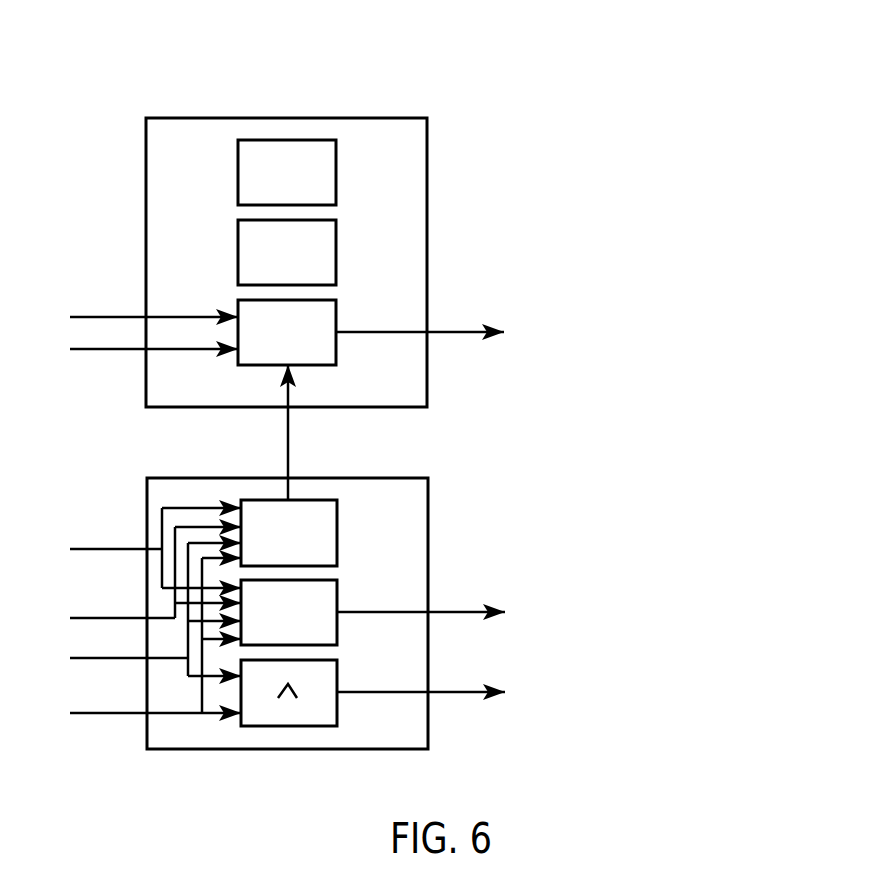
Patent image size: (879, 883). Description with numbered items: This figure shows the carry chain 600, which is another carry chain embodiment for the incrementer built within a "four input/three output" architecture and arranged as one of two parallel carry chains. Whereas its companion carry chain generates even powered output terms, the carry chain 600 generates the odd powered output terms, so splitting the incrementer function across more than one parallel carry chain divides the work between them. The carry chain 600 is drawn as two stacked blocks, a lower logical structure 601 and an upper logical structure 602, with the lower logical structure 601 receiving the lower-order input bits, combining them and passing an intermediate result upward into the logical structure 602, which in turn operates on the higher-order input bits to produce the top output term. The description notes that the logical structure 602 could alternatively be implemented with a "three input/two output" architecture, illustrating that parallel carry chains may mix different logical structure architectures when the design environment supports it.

The carry chain 600 is at (675, 44).
The first logic stage (AND/XOR block) 601 is at (407, 531).
The logical structure 602 is at (402, 184).